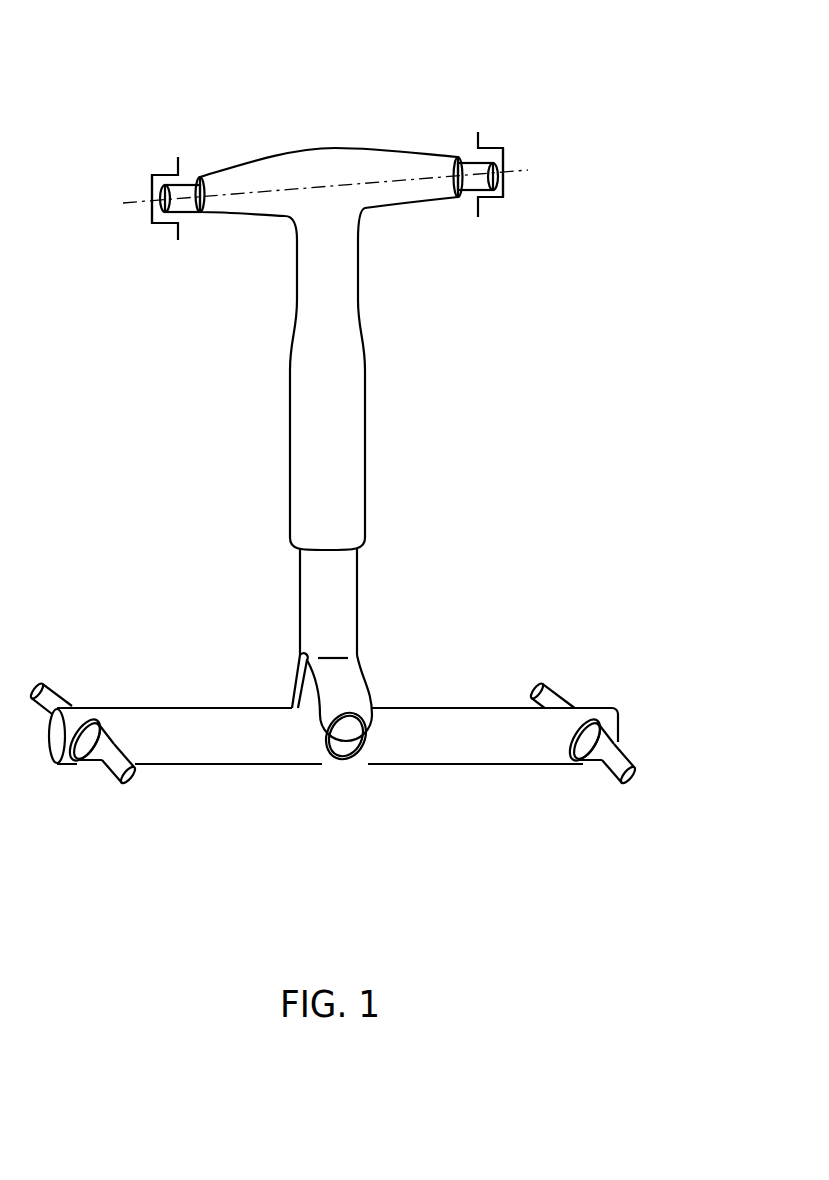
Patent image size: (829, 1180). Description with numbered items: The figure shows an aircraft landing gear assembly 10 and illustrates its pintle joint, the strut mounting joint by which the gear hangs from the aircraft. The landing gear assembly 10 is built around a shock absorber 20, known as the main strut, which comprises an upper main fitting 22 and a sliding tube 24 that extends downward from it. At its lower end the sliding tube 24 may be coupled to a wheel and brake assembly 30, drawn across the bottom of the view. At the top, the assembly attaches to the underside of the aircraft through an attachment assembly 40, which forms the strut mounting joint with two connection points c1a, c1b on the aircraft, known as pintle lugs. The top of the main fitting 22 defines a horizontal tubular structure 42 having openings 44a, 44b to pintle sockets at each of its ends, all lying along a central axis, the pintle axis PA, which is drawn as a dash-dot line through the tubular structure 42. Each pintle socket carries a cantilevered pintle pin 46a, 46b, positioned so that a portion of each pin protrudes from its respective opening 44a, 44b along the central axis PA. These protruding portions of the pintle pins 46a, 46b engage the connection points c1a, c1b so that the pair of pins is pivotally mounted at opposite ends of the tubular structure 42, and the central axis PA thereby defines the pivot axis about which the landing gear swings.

The aircraft landing gear assembly 10 is at (333, 475).
The shock absorber 20 is at (344, 503).
The main fitting 22 is at (290, 460).
The sliding tube 24 is at (357, 602).
The wheel and brake assembly 30 is at (235, 796).
The attachment assembly 40 is at (350, 276).
The horizontal tubular structure 42 is at (388, 152).
The opening 44a is at (465, 160).
The opening 44b is at (197, 182).
The pintle pin 46a is at (483, 150).
The pintle pin 46b is at (172, 178).
The connection point c1a is at (492, 200).
The connection point c1b is at (165, 225).
The pintle axis PA is at (307, 194).